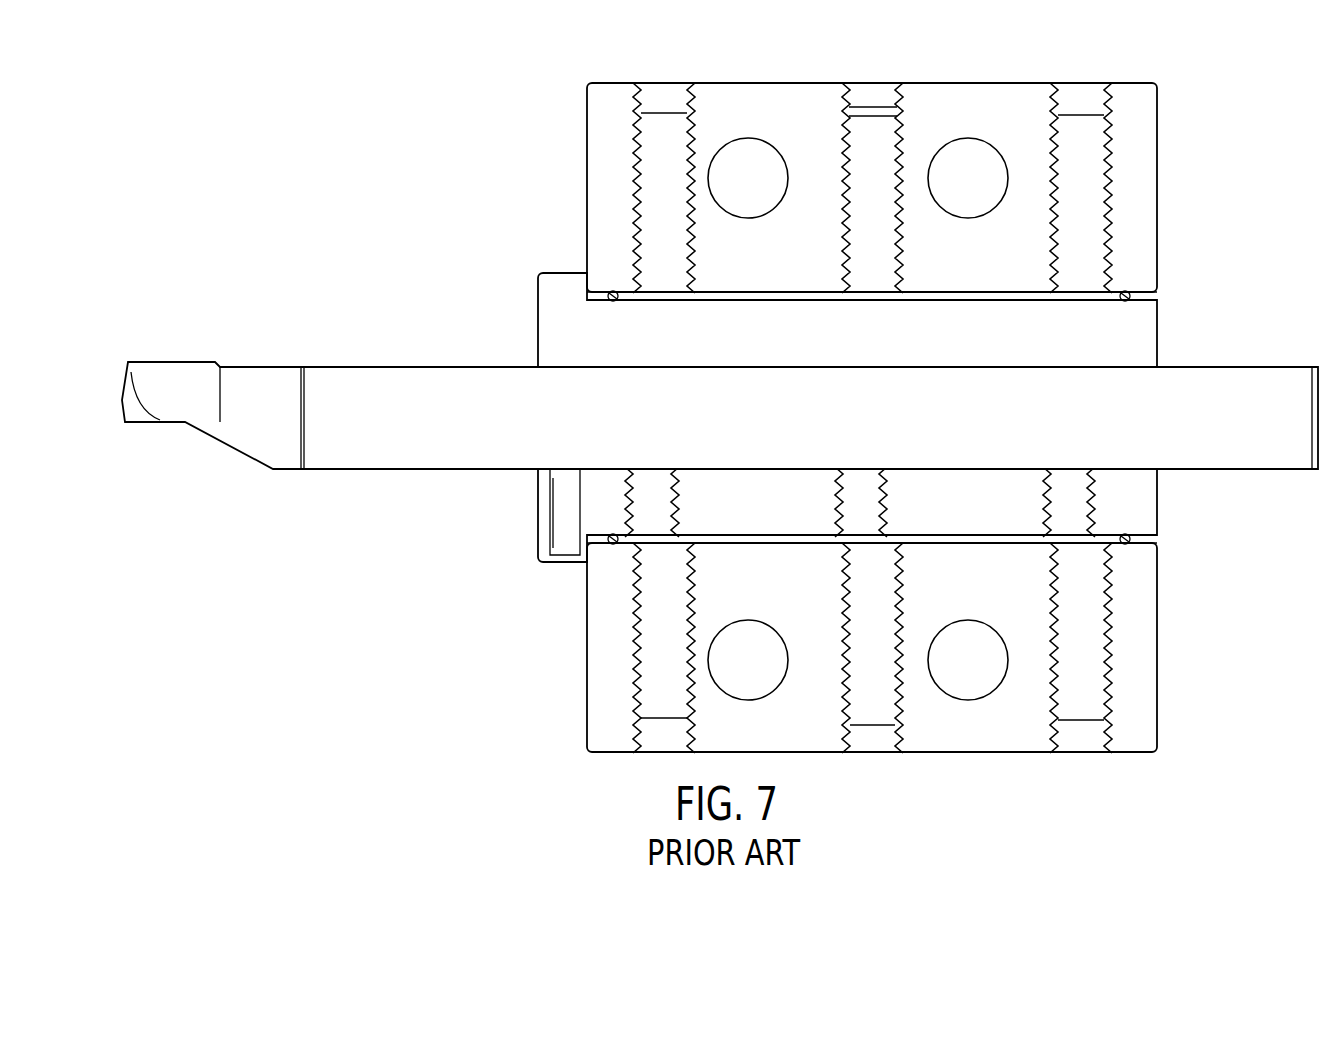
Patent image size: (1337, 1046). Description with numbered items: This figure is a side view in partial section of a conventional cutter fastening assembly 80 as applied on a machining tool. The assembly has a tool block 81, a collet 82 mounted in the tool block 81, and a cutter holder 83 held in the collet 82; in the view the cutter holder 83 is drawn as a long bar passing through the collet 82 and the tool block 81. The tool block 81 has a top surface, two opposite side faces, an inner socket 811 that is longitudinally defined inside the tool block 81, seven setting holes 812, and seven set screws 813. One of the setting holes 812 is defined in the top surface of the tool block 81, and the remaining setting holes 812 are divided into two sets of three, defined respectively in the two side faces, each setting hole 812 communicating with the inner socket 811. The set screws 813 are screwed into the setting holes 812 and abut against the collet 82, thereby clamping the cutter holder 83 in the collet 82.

The cutter fastening assembly 80 is at (557, 163).
The tool block 81 is at (1158, 213).
The collet 82 is at (552, 322).
The cutter holder 83 is at (349, 386).
The inner socket 811 is at (965, 301).
The setting holes 812 is at (860, 107).
The set screws 813 is at (1083, 125).